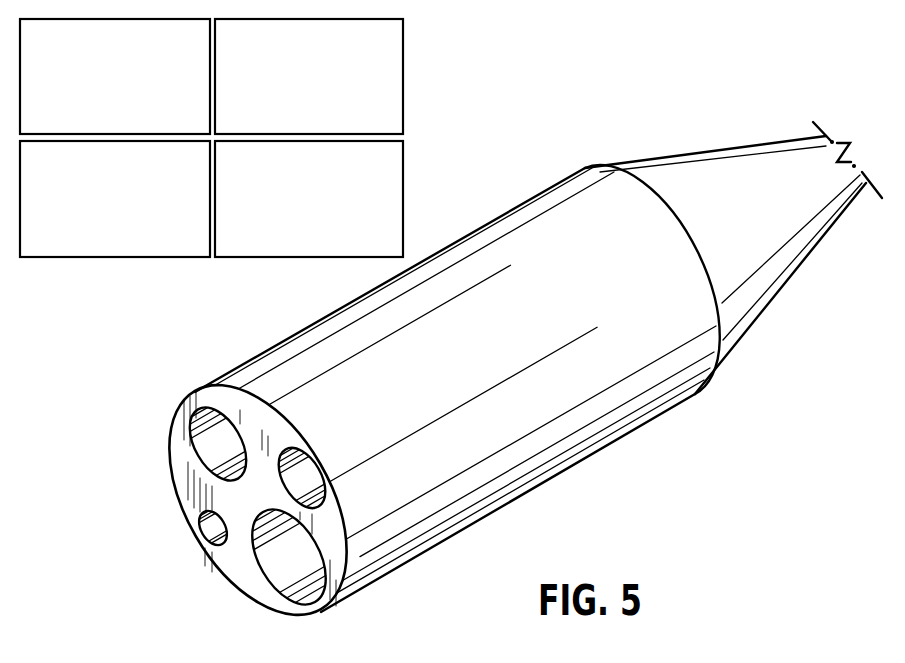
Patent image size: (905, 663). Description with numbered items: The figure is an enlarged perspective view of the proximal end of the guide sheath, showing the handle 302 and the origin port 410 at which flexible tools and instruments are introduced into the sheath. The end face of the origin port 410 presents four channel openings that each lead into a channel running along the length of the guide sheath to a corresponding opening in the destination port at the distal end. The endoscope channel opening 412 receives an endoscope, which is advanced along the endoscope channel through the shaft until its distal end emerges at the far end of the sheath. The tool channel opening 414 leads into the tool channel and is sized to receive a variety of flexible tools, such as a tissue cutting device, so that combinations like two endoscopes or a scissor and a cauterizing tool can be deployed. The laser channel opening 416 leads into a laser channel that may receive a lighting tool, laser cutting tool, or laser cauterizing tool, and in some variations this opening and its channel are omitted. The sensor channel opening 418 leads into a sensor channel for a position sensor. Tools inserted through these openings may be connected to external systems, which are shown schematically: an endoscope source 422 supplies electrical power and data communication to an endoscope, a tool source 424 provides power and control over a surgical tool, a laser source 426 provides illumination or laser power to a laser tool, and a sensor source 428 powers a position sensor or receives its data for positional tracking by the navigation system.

The handle 302 is at (500, 420).
The origin port 410 is at (124, 565).
The endoscope channel opening 412 is at (207, 442).
The tool channel opening 414 is at (303, 582).
The laser channel opening 416 is at (210, 525).
The sensor channel opening 418 is at (308, 478).
The endoscope source 422 is at (125, 124).
The tool source 424 is at (321, 124).
The laser source 426 is at (125, 246).
The sensor source 428 is at (321, 246).